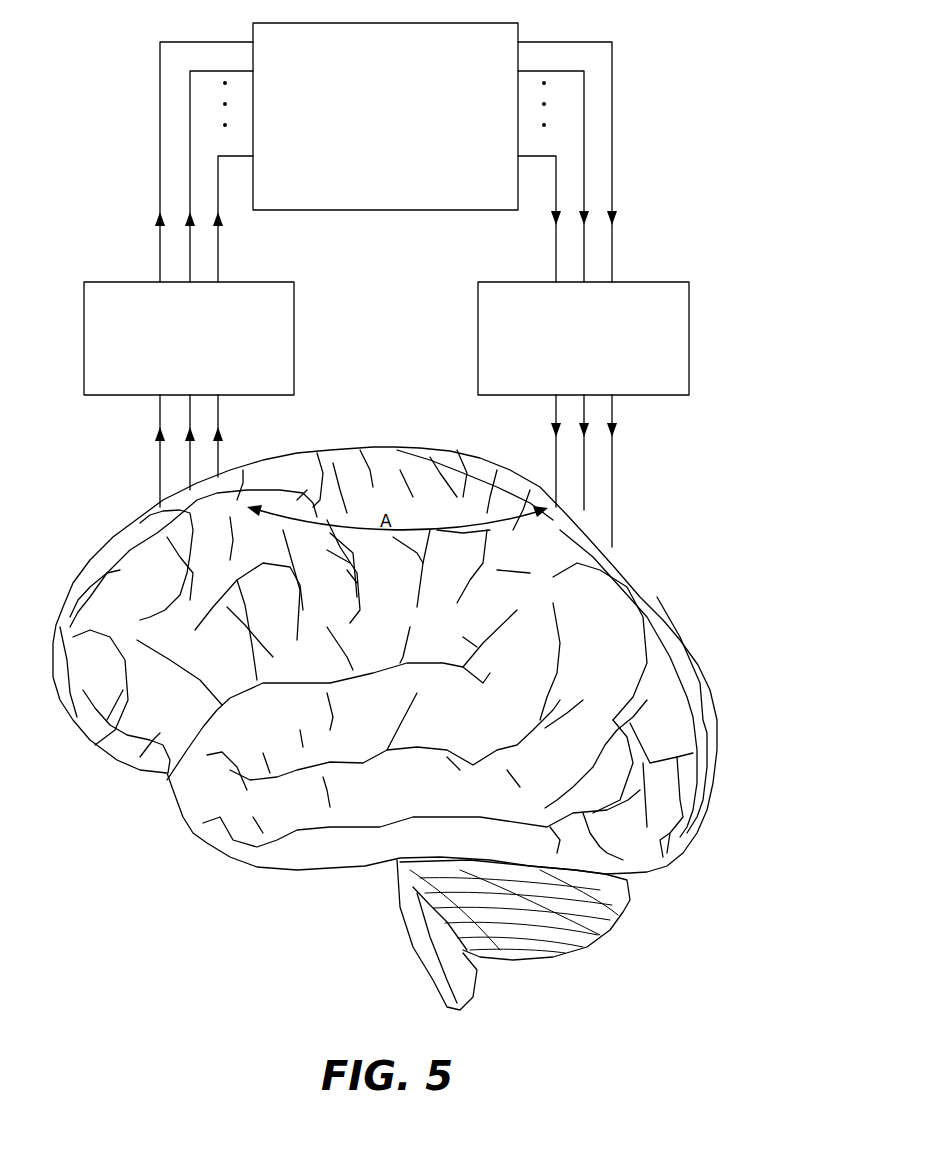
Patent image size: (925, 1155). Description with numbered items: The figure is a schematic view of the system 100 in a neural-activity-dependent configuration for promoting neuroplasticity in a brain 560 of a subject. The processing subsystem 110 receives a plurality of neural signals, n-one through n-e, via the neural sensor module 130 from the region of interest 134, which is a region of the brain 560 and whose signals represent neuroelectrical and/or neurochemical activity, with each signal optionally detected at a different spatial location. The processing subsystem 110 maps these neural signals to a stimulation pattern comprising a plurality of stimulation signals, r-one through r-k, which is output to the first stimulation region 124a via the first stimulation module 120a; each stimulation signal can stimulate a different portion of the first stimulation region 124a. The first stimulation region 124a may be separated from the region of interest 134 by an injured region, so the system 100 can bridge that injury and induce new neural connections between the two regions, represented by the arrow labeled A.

The system 100 is at (138, 104).
The processing subsystem 110 is at (385, 116).
The neural sensor module 130 is at (189, 338).
The first stimulation module 120a is at (583, 338).
The region of interest 134 is at (167, 509).
The first stimulation region 124a is at (578, 519).
The brain 560 is at (270, 867).